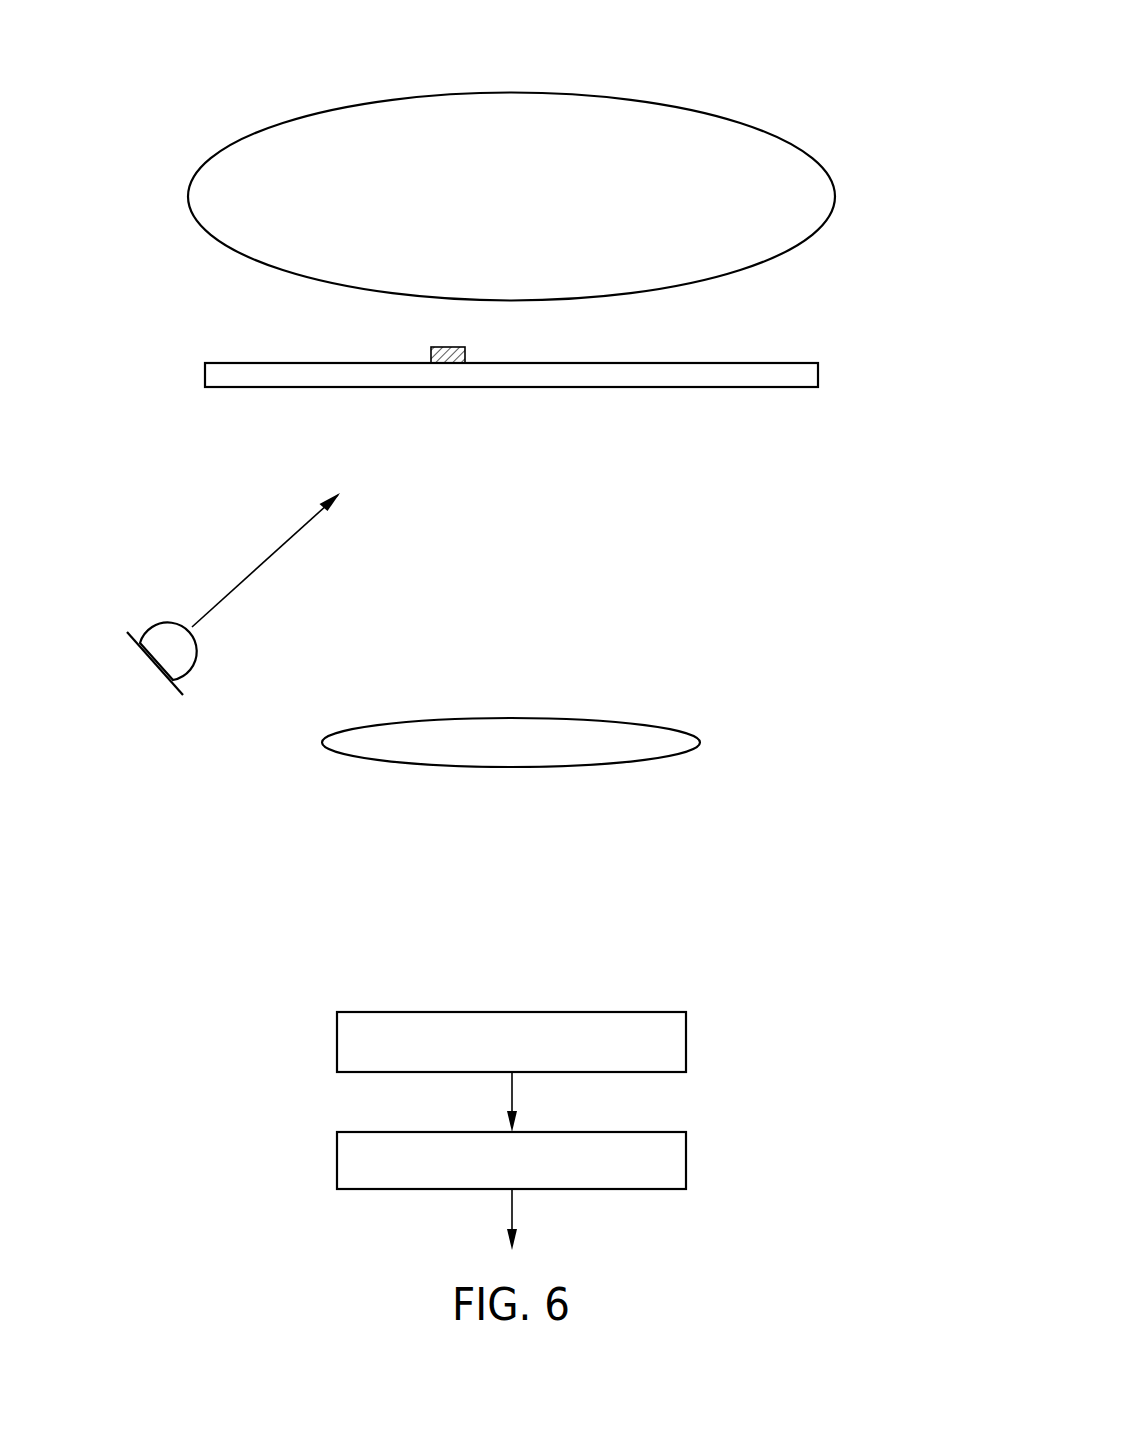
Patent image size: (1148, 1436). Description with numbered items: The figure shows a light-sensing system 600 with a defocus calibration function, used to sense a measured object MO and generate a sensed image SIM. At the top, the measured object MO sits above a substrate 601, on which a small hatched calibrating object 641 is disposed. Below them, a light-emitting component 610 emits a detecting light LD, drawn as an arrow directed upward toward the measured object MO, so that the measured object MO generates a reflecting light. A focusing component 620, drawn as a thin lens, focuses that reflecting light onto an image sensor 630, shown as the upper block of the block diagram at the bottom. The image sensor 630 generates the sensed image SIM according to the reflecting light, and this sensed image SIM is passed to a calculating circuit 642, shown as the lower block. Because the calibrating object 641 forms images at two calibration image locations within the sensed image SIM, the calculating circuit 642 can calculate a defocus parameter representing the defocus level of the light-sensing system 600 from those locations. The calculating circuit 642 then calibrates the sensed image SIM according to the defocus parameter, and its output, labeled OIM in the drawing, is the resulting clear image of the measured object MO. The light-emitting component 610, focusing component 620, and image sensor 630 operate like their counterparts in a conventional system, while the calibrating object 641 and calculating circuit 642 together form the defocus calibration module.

The light-sensing system 600 is at (258, 90).
The measured object MO is at (753, 124).
The substrate 601 is at (792, 363).
The calibrating object 641 is at (431, 350).
The light-emitting component 610 is at (157, 622).
The detecting light LD is at (266, 560).
The focusing component 620 is at (693, 726).
The image sensor 630 is at (655, 1012).
The sensed image SIM is at (539, 1102).
The calculating circuit 642 is at (655, 1132).
The output image / measurement result OIM is at (541, 1219).